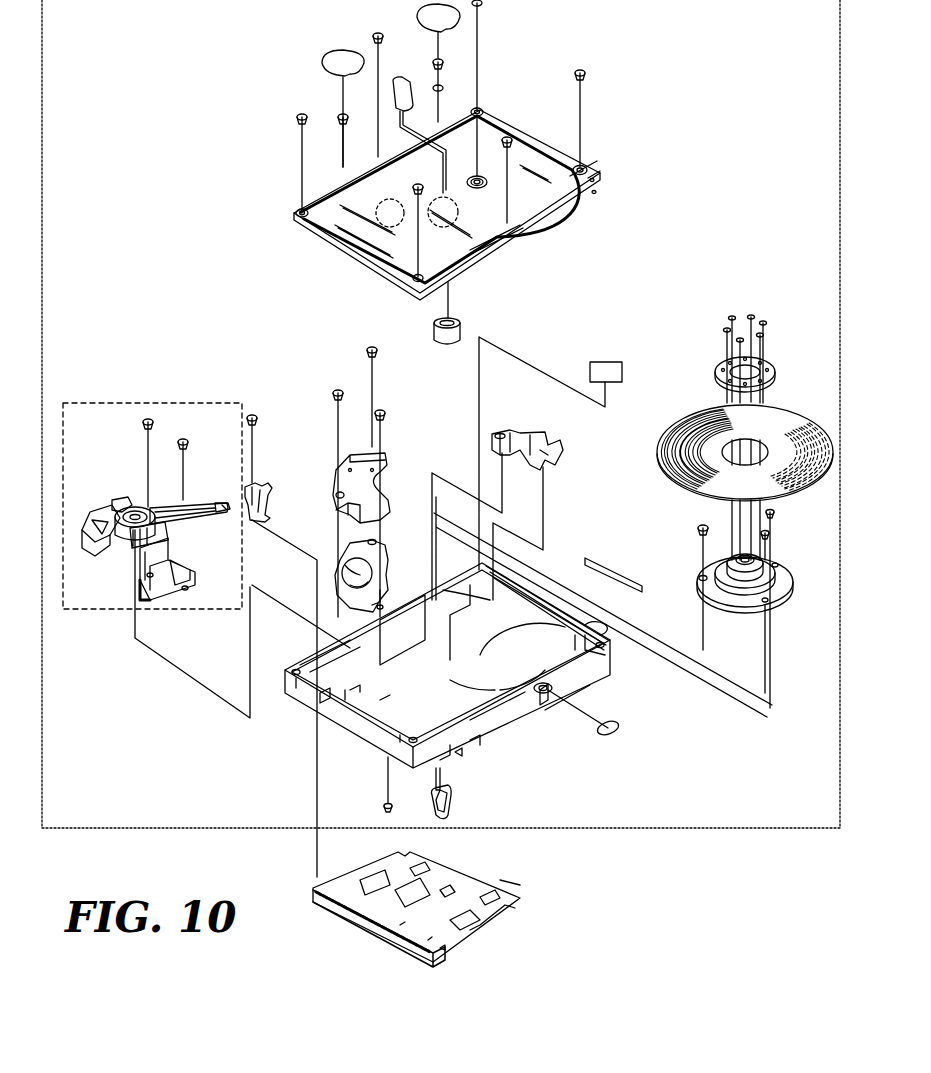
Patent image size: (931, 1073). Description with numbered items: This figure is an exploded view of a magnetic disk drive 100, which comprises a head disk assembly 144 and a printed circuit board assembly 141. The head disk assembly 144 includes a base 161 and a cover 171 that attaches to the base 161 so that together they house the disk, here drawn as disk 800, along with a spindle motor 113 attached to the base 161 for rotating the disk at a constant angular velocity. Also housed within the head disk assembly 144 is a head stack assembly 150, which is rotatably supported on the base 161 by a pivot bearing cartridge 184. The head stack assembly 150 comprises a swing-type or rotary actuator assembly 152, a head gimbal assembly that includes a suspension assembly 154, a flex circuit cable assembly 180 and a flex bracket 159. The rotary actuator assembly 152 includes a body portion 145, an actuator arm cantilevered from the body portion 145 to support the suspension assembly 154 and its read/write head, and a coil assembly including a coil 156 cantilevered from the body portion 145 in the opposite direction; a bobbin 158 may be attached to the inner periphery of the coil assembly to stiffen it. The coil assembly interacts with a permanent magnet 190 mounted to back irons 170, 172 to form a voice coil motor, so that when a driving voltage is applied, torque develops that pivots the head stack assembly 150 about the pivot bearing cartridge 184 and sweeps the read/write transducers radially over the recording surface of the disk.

The magnetic disk drive 100 is at (695, 852).
The spindle motor 113 is at (687, 557).
The printed circuit board assembly 141 is at (472, 932).
The head disk assembly 144 is at (597, 830).
The body portion 145 is at (140, 510).
The head stack assembly 150 is at (118, 403).
The rotary actuator assembly 152 is at (163, 507).
The suspension assembly 154 is at (223, 507).
The coil 156 is at (92, 542).
The bobbin 158 is at (100, 523).
The flex bracket 159 is at (193, 570).
The base 161 is at (500, 733).
The back iron 170 is at (327, 487).
The cover 171 is at (567, 203).
The back iron 172 is at (390, 553).
The flex circuit cable assembly 180 is at (167, 540).
The pivot bearing cartridge 184 is at (122, 503).
The permanent magnet 190 is at (338, 568).
The disk 800 is at (682, 420).